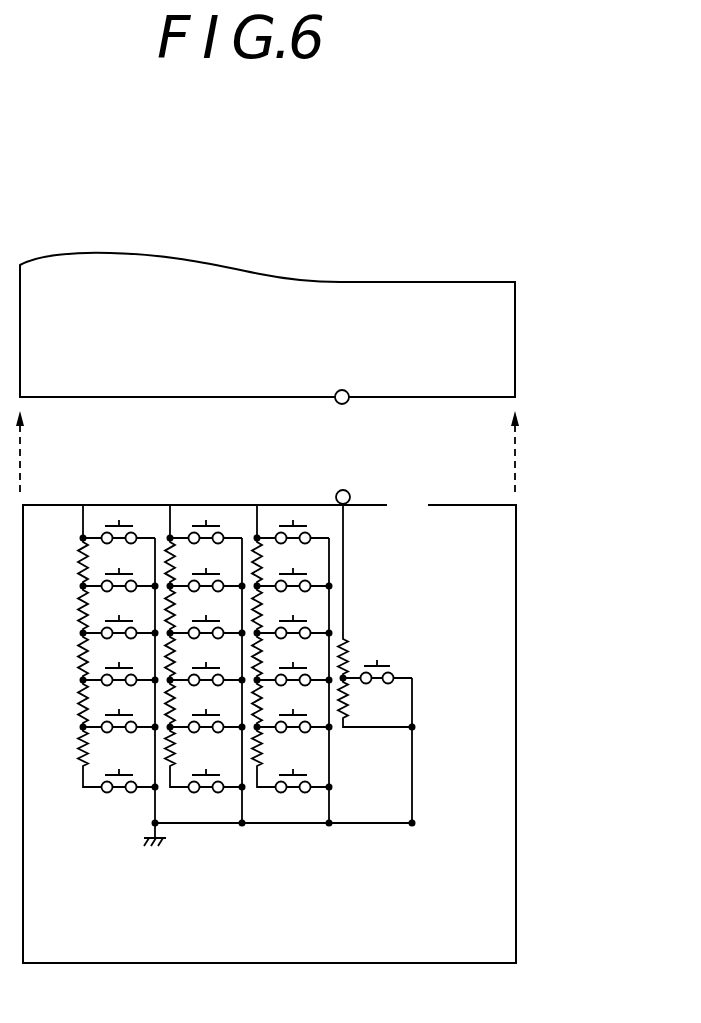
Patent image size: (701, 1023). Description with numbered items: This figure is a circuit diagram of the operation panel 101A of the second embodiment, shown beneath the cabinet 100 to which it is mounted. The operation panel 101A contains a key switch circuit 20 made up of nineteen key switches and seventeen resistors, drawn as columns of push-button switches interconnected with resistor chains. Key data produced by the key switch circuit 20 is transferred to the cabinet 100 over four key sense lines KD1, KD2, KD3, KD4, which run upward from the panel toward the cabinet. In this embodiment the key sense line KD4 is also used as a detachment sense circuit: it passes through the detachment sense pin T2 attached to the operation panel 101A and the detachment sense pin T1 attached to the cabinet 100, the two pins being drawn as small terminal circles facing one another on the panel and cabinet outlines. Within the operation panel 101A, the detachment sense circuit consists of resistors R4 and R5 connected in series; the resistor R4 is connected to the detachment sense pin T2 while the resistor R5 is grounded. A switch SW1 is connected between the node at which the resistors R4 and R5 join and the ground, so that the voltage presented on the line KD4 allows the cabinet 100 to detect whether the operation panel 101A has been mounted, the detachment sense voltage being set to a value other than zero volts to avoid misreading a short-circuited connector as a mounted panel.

The cabinet 100 is at (500, 347).
The operation panel 101A is at (470, 845).
The key switch circuit 20 is at (190, 691).
The key sense line KD1 is at (111, 650).
The key sense line KD2 is at (198, 650).
The key sense line KD3 is at (285, 650).
The key sense line KD4 is at (349, 544).
The detachment sense pin T1 is at (347, 403).
The detachment sense pin T2 is at (350, 496).
The resistor R4 is at (353, 645).
The resistor R5 is at (355, 703).
The switch SW1 is at (397, 664).